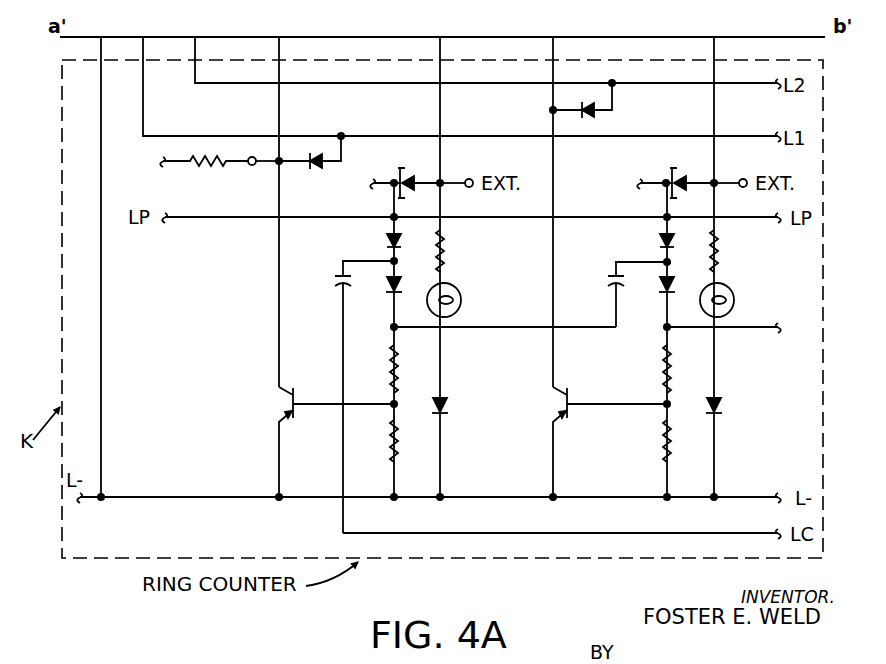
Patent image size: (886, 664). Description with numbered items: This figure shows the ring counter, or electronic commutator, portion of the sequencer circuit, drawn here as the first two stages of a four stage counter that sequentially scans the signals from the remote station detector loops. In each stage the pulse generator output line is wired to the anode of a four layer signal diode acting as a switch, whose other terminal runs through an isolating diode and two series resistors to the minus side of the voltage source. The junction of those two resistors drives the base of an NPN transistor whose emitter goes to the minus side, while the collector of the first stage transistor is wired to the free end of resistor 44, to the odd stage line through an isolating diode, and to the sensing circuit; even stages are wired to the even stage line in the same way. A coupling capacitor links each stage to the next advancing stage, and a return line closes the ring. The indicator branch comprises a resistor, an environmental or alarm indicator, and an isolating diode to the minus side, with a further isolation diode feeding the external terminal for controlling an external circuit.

The resistor 44 is at (218, 163).